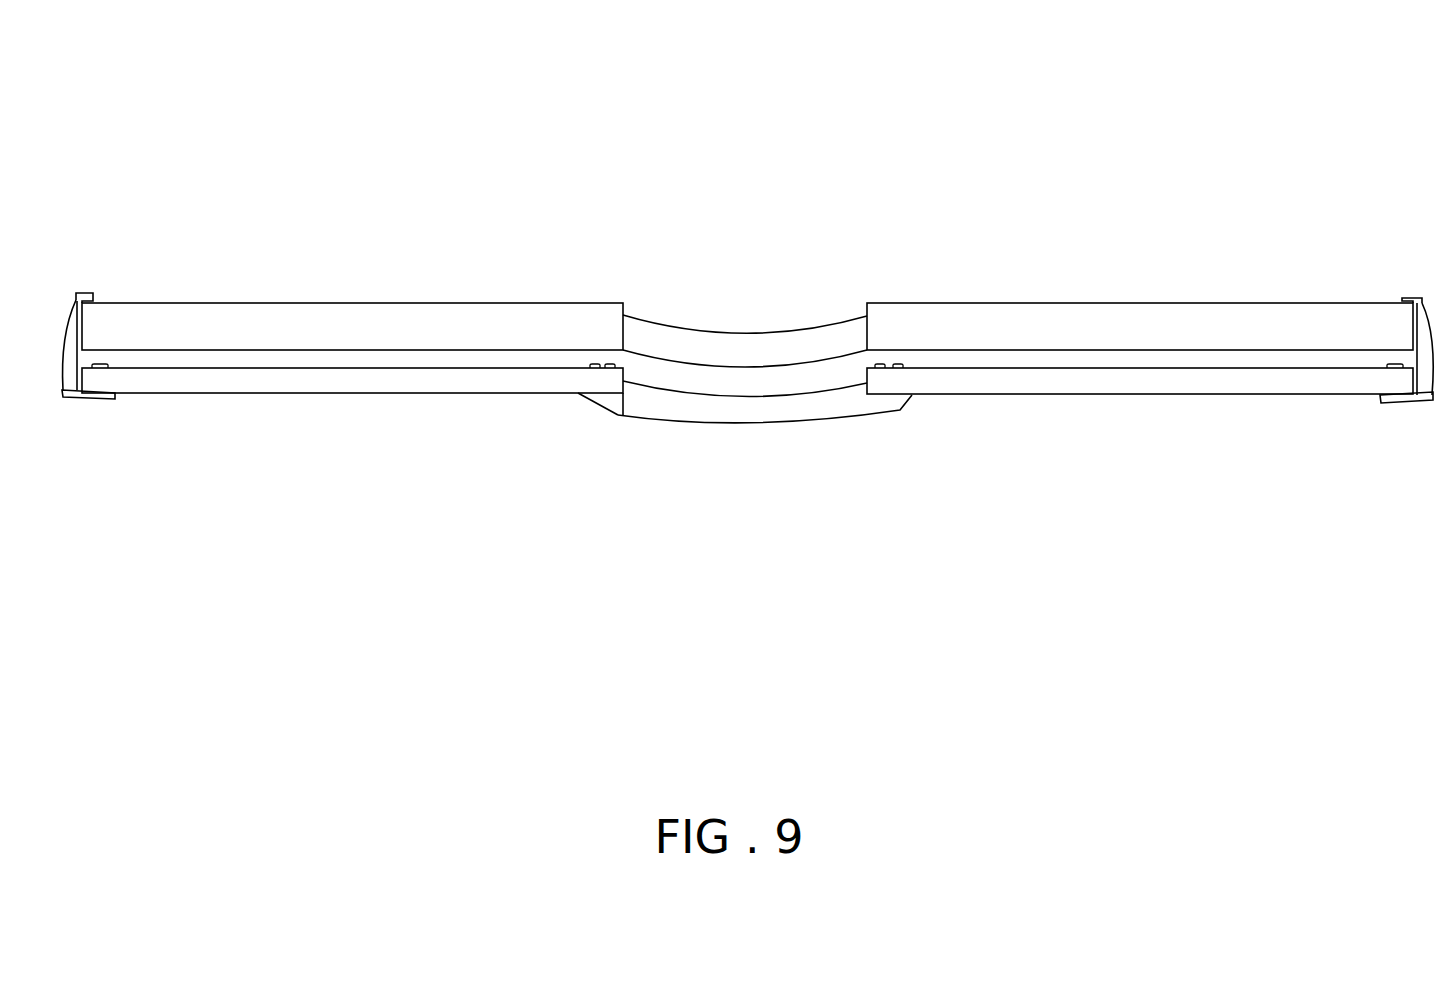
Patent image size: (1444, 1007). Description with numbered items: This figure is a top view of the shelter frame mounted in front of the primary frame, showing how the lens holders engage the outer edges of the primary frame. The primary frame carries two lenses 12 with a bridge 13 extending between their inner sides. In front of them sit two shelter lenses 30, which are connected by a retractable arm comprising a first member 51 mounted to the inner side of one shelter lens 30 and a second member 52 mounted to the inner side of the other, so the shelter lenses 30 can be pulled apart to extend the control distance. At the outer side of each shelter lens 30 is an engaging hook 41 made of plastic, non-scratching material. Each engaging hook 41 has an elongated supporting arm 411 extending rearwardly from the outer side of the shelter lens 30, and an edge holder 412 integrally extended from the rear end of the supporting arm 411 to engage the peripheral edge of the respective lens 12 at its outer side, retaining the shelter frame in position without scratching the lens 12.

The lens 12 is at (418, 325).
The bridge 13 is at (753, 350).
The shelter lens 30 is at (385, 375).
The engaging hook 41 is at (747, 225).
The supporting arm 411 is at (76, 338).
The edge holder 412 is at (88, 291).
The first member 51 is at (768, 403).
The second member 52 is at (600, 398).